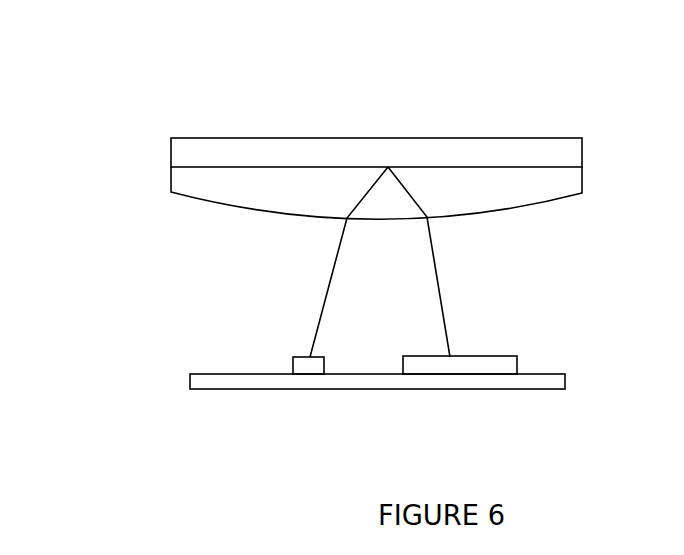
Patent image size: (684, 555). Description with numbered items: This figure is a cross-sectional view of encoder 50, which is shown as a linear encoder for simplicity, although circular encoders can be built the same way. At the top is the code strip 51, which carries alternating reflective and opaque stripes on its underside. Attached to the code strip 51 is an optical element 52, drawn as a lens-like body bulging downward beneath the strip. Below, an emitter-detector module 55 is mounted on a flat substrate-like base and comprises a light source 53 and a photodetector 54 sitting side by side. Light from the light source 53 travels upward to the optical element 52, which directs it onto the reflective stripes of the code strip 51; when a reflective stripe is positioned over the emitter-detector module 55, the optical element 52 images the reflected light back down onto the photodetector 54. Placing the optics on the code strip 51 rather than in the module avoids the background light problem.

The encoder 50 is at (120, 112).
The code strip 51 is at (443, 147).
The optical element 52 is at (270, 200).
The light source 53 is at (310, 363).
The photodetector 54 is at (497, 368).
The emitter-detector module 55 is at (552, 383).